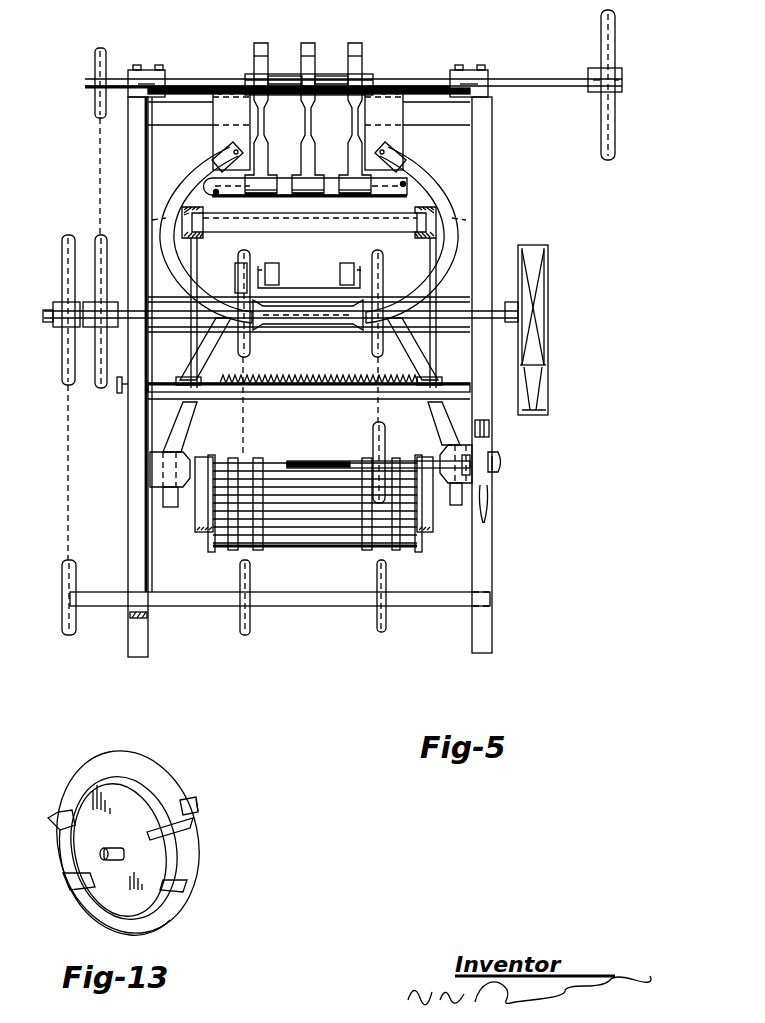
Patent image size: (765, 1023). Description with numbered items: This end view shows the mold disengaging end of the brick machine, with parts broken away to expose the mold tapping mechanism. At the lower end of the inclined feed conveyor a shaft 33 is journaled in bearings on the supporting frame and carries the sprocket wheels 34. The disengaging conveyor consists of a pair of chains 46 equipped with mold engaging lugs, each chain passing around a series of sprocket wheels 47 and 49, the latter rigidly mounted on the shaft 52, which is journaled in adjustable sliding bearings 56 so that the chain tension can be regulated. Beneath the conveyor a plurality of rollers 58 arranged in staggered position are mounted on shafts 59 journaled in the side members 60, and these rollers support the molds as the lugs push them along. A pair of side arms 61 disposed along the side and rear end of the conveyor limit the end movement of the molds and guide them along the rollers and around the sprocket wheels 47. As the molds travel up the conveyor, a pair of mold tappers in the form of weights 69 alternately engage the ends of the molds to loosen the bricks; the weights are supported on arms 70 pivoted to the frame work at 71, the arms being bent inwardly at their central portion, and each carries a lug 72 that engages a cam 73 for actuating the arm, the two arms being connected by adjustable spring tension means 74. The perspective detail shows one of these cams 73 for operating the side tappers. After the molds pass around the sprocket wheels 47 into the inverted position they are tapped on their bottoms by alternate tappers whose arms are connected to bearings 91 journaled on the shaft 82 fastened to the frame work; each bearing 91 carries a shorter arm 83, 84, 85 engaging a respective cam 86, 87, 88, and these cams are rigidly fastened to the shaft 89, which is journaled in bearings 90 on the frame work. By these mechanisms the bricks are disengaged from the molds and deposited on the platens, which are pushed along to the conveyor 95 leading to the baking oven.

In FIG. 5, the shaft 33 is at (192, 606).
In FIG. 5, the sprocket wheels 34 is at (375, 615).
In FIG. 5, the chains 46 is at (376, 412).
In FIG. 5, the sprocket wheels 47 is at (235, 378).
In FIG. 5, the sprocket wheels 49 is at (386, 442).
In FIG. 5, the shaft 52 is at (320, 461).
In FIG. 5, the adjustable sliding bearings 56 is at (500, 460).
In FIG. 5, the rollers 58 is at (232, 550).
In FIG. 5, the shafts 59 is at (292, 530).
In FIG. 5, the side members 60 is at (208, 540).
In FIG. 5, the side arms 61 is at (195, 239).
In FIG. 5, the weights 69 is at (160, 478).
In FIG. 5, the arms 70 is at (160, 241).
In FIG. 5, the pivots 71 is at (228, 150).
In FIG. 5, the lug 72 is at (240, 319).
In FIG. 5, the cam 73 is at (245, 266).
In FIG. 13, the cam 73 is at (158, 798).
In FIG. 5, the adjustable spring tension means 74 is at (300, 395).
In FIG. 5, the shaft 82 is at (405, 190).
In FIG. 5, the shorter arm 83 is at (254, 62).
In FIG. 5, the shorter arm 84 is at (301, 62).
In FIG. 5, the shorter arm 85 is at (348, 62).
In FIG. 5, the cam 86 is at (250, 94).
In FIG. 5, the cam 87 is at (297, 93).
In FIG. 5, the cam 88 is at (340, 93).
In FIG. 5, the shaft 89 is at (546, 87).
In FIG. 5, the bearings 90 is at (152, 80).
In FIG. 5, the bearings 91 is at (358, 196).
In FIG. 5, the conveyor 95 is at (342, 270).